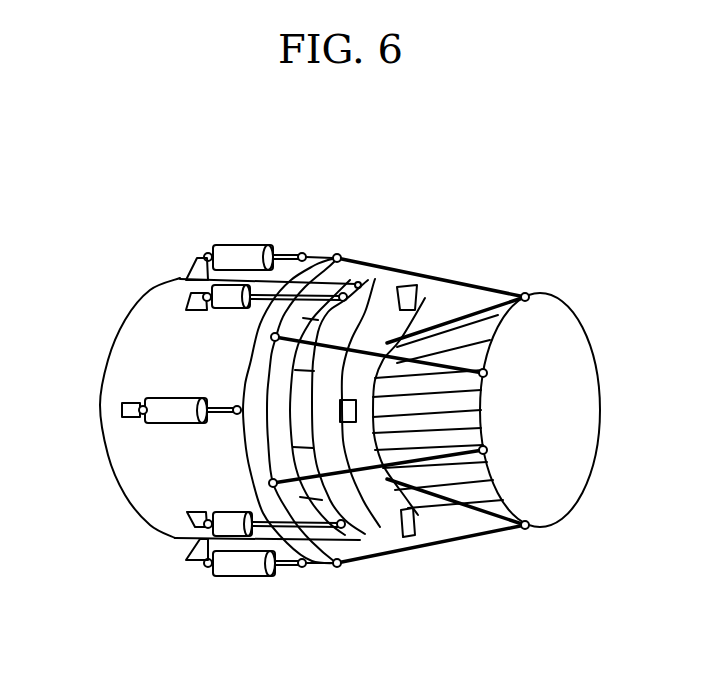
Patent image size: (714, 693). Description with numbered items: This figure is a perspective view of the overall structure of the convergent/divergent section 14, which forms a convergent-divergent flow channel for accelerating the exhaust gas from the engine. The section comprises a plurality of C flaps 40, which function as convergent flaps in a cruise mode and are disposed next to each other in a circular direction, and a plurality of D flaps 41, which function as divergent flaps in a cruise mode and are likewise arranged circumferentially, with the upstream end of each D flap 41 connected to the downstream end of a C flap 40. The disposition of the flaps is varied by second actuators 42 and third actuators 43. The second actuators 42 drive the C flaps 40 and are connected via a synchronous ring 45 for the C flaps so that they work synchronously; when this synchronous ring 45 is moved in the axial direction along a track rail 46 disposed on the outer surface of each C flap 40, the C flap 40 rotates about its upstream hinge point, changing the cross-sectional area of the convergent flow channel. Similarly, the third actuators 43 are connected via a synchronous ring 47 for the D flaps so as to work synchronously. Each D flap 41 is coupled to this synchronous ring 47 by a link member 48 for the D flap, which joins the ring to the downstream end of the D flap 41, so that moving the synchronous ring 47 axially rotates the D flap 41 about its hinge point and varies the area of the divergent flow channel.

The convergent/divergent section 14 is at (487, 209).
The C flap 40 is at (381, 310).
The D flap 41 is at (478, 326).
The second actuator 42 is at (230, 318).
The third actuator 43 is at (243, 245).
The synchronous ring for C flaps 45 is at (365, 530).
The track rail 46 is at (432, 300).
The synchronous ring for D flap 47 is at (287, 548).
The link member for D flap 48 is at (372, 275).